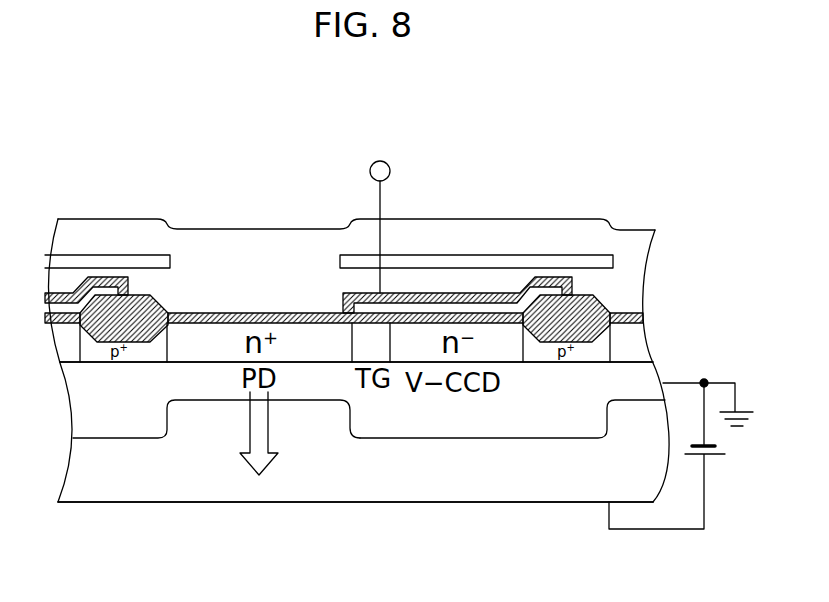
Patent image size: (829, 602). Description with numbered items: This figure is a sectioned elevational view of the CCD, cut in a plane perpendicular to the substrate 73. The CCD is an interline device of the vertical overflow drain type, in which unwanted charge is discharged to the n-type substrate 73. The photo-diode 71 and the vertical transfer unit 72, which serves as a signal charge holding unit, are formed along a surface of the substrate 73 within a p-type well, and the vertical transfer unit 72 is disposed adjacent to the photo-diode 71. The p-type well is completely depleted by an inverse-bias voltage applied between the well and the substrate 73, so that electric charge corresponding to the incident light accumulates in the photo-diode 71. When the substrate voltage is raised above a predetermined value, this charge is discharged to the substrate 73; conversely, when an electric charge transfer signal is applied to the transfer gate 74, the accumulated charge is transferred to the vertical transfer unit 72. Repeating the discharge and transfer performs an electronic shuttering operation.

The photo-diode 71 is at (202, 383).
The vertical transfer unit 72 is at (500, 418).
The substrate 73 is at (355, 478).
The transfer gate 74 is at (368, 352).